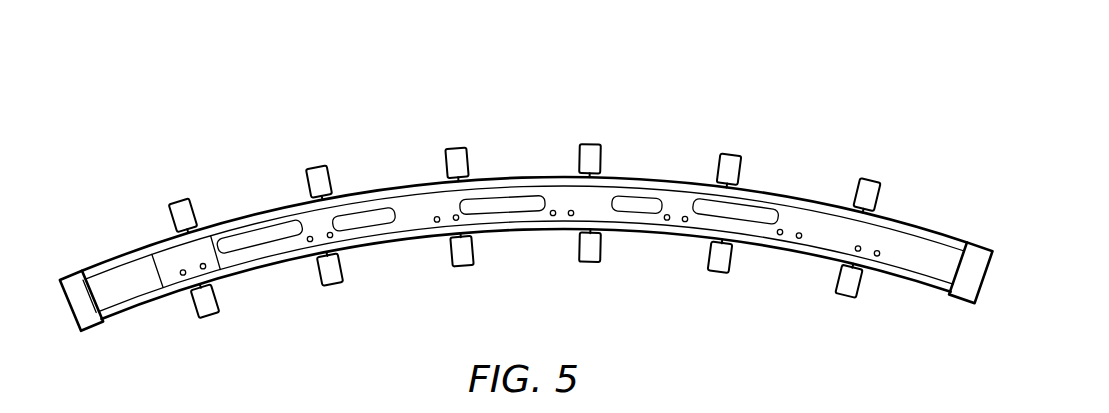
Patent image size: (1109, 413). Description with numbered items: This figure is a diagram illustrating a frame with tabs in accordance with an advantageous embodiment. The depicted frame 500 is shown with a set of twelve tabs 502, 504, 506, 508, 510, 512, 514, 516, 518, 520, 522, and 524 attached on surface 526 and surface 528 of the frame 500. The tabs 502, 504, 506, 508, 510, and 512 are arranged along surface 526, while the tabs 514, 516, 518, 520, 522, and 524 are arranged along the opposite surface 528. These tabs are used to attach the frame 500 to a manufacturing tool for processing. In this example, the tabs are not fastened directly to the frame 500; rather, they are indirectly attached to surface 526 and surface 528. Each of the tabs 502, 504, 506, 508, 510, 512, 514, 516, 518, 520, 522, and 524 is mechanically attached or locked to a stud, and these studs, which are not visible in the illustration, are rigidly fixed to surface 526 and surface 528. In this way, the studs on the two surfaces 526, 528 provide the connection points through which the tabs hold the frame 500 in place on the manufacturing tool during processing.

The frame 500 is at (680, 89).
The tab 502 is at (183, 200).
The tab 504 is at (319, 167).
The tab 506 is at (457, 148).
The tab 508 is at (590, 144).
The tab 510 is at (731, 155).
The tab 512 is at (870, 180).
The tab 514 is at (846, 296).
The tab 516 is at (719, 272).
The tab 518 is at (590, 262).
The tab 520 is at (463, 266).
The tab 522 is at (332, 284).
The tab 524 is at (207, 316).
The surface 526 is at (926, 229).
The surface 528 is at (927, 289).